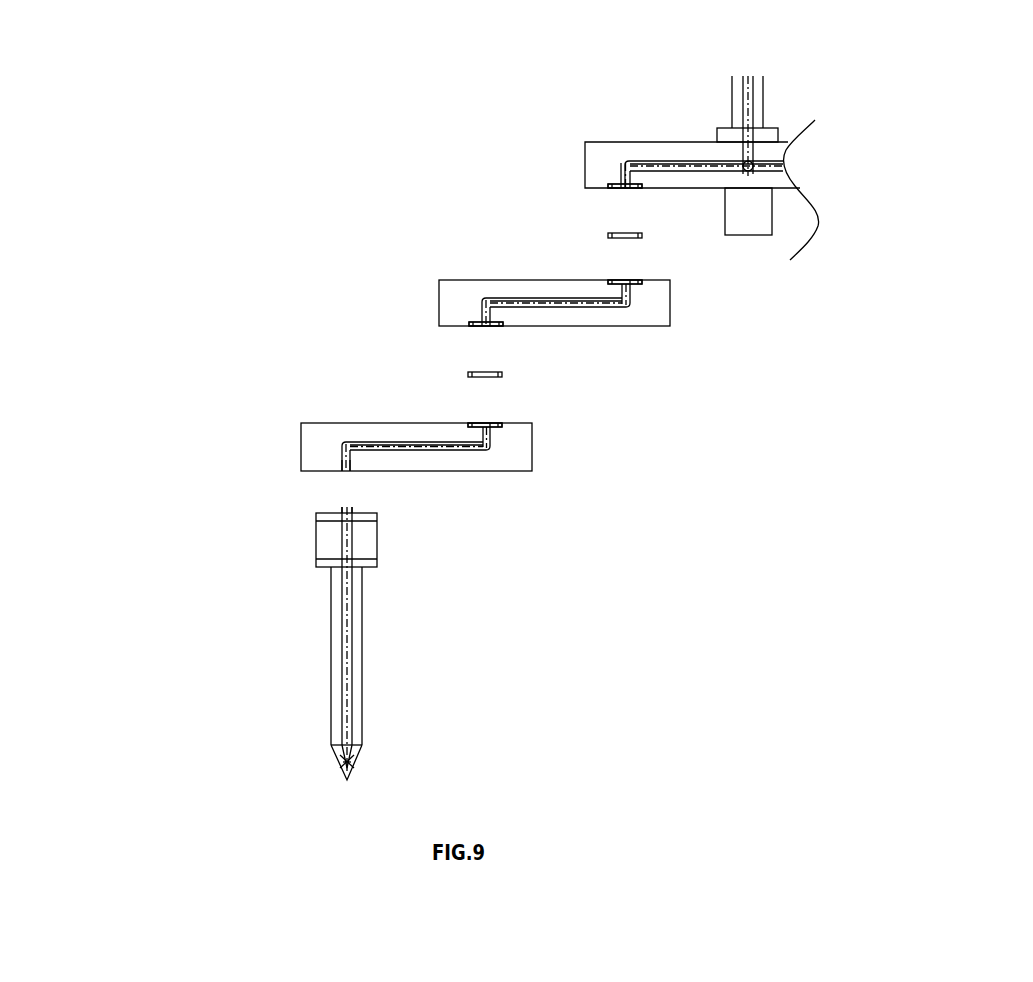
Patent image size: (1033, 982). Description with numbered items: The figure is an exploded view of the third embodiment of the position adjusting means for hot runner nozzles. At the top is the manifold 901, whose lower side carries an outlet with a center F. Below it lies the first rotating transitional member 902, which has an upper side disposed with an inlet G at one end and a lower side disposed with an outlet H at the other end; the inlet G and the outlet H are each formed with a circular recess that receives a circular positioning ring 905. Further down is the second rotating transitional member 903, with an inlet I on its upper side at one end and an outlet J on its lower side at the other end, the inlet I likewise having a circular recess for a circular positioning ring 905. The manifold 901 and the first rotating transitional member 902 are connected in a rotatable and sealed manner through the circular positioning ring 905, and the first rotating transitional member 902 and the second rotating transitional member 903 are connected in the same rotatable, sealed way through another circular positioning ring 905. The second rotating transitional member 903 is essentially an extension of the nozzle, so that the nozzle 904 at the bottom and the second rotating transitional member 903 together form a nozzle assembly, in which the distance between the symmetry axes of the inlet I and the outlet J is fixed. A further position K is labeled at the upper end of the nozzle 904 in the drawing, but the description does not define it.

The manifold 901 is at (655, 150).
The first rotating transitional member 902 is at (458, 297).
The second rotating transitional member 903 is at (327, 440).
The nozzle 904 is at (327, 547).
The circular positioning ring 905 is at (635, 238).
The center of manifold outlet F is at (627, 190).
The inlet G is at (627, 283).
The outlet H is at (485, 327).
The inlet I is at (487, 427).
The outlet J is at (347, 471).
The port K is at (343, 515).